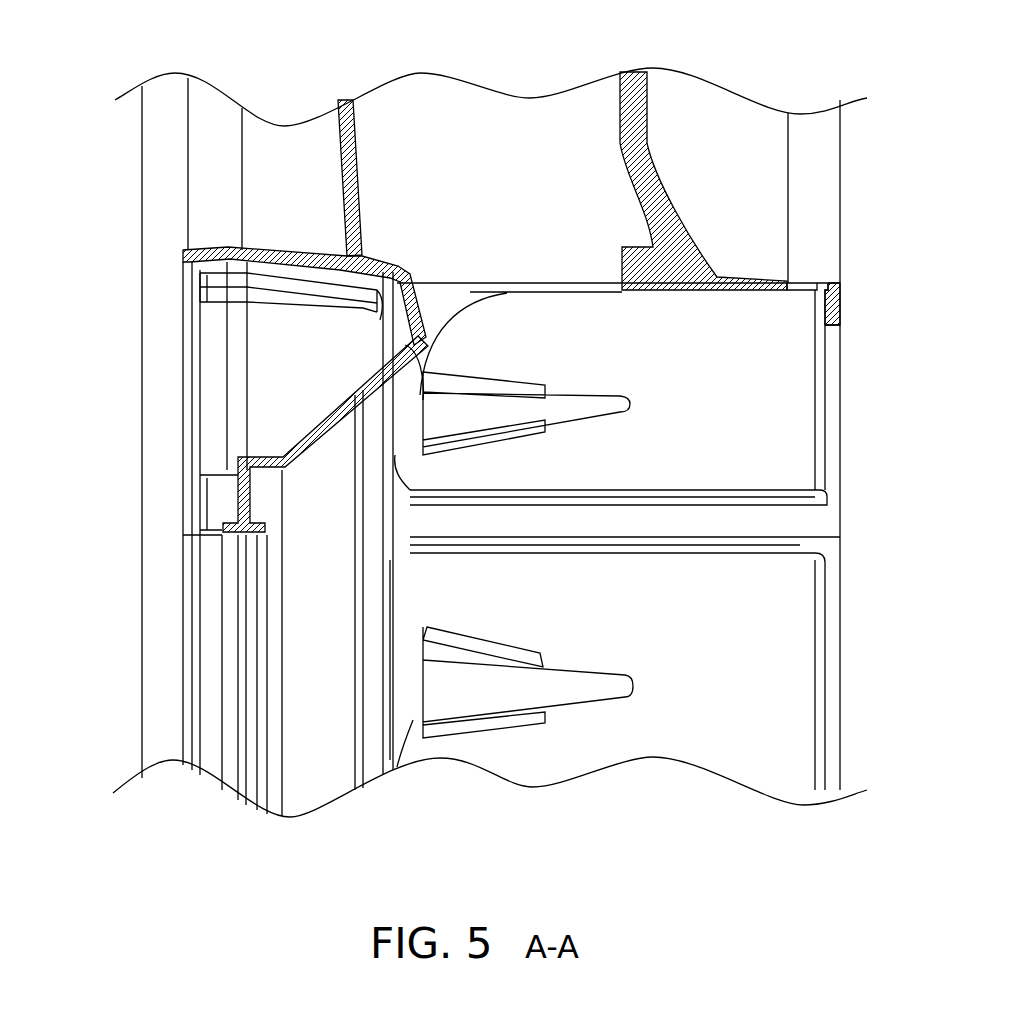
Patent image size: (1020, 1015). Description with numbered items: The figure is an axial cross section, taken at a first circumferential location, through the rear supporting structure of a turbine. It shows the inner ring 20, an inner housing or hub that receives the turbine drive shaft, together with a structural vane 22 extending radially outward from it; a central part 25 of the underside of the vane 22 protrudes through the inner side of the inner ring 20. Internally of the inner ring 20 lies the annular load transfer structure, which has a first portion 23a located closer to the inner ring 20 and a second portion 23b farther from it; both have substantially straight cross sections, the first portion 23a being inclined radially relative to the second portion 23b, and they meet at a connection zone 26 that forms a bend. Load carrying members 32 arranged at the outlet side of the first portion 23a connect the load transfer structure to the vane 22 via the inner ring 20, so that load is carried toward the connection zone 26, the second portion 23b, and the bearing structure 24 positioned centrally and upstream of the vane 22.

The inner annular member 20 is at (807, 285).
The structural vane 22 is at (647, 150).
The first portion 23a is at (388, 305).
The second portion 23b is at (320, 432).
The bearing structure 24 is at (240, 567).
The central part 25 is at (587, 400).
The connection zone 26 is at (407, 333).
The load carrying member 32 is at (447, 292).